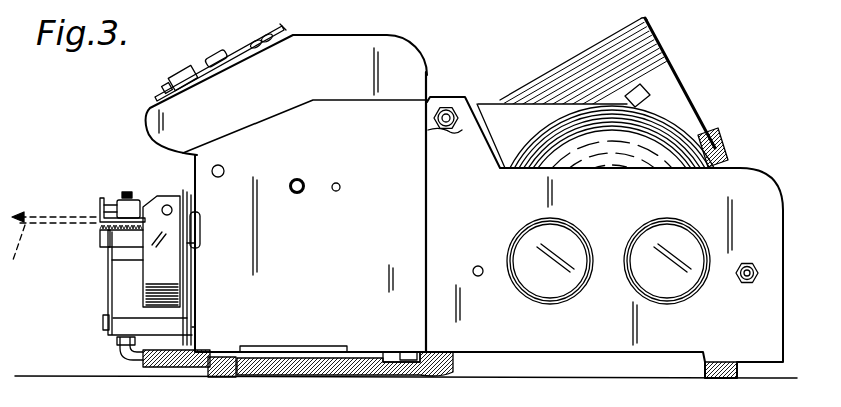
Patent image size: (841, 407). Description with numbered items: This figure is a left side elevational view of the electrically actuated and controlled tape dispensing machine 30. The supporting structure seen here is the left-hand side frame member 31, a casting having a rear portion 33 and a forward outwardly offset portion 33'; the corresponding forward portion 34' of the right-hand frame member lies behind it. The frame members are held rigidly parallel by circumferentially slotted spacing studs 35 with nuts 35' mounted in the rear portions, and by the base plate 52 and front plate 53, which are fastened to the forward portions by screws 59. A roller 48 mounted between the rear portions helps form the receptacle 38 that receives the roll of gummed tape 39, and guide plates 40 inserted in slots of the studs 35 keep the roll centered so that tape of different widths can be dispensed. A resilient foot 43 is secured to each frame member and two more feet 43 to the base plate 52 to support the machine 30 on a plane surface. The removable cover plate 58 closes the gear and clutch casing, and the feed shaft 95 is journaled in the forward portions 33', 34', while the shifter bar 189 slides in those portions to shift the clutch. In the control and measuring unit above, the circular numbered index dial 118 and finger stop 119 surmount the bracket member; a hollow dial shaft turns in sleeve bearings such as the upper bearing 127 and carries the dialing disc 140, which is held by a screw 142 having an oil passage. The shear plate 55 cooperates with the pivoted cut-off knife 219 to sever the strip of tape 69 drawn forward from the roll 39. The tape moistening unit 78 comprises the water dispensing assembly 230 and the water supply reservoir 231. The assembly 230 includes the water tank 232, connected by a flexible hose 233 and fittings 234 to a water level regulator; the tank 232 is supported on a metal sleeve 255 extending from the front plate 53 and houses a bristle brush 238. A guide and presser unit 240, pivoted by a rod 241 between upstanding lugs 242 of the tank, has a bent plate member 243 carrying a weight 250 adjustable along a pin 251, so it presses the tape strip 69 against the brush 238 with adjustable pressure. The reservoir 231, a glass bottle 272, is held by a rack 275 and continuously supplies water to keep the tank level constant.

The tape dispensing machine 30 is at (515, 42).
The left-hand side frame member 31 is at (412, 113).
The rear portion 33 is at (605, 237).
The forward outwardly offset portion 33' is at (286, 207).
The forward outwardly offset portion 34' is at (516, 398).
The spacing stud 35 is at (596, 197).
The nut 35' is at (605, 165).
The receptacle 38 is at (688, 240).
The roll of gummed tape 39 is at (700, 130).
The guide plate 40 is at (500, 100).
The foot 43 is at (222, 375).
The roller 48 is at (478, 266).
The base plate 52 is at (300, 375).
The front plate 53 is at (193, 327).
The shear plate 55 is at (184, 192).
The removable cover plate 58 is at (420, 352).
The screw 59 is at (186, 265).
The strip of tape 69 is at (52, 239).
The tape moistening unit 78 is at (100, 286).
The feed shaft 95 is at (297, 193).
The circular numbered index dial 118 is at (283, 32).
The finger stop 119 is at (168, 72).
The sleeve bearing 127 is at (225, 68).
The dialing disc 140 is at (252, 40).
The screw 142 is at (218, 54).
The shifter bar 189 is at (338, 183).
The cut-off knife 219 is at (188, 243).
The water dispensing assembly 230 is at (96, 251).
The water supply reservoir 231 is at (682, 60).
The water tank 232 is at (180, 215).
The flexible hose 233 is at (410, 352).
The fitting 234 is at (125, 350).
The bristle brush 238 is at (108, 236).
The guide and presser unit 240 is at (111, 185).
The rod 241 is at (165, 207).
The upstanding lug 242 is at (174, 238).
The plate member 243 is at (100, 205).
The weight 250 is at (127, 192).
The pin 251 is at (105, 198).
The metal sleeve 255 is at (103, 323).
The glass bottle 272 is at (650, 48).
The rack 275 is at (640, 95).